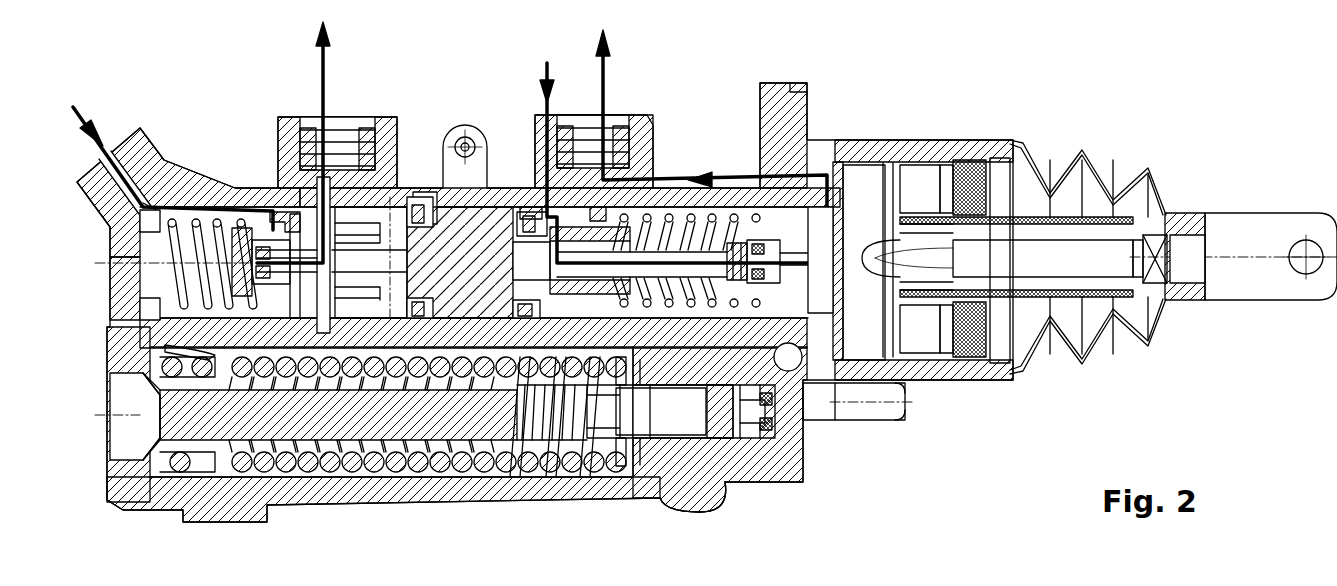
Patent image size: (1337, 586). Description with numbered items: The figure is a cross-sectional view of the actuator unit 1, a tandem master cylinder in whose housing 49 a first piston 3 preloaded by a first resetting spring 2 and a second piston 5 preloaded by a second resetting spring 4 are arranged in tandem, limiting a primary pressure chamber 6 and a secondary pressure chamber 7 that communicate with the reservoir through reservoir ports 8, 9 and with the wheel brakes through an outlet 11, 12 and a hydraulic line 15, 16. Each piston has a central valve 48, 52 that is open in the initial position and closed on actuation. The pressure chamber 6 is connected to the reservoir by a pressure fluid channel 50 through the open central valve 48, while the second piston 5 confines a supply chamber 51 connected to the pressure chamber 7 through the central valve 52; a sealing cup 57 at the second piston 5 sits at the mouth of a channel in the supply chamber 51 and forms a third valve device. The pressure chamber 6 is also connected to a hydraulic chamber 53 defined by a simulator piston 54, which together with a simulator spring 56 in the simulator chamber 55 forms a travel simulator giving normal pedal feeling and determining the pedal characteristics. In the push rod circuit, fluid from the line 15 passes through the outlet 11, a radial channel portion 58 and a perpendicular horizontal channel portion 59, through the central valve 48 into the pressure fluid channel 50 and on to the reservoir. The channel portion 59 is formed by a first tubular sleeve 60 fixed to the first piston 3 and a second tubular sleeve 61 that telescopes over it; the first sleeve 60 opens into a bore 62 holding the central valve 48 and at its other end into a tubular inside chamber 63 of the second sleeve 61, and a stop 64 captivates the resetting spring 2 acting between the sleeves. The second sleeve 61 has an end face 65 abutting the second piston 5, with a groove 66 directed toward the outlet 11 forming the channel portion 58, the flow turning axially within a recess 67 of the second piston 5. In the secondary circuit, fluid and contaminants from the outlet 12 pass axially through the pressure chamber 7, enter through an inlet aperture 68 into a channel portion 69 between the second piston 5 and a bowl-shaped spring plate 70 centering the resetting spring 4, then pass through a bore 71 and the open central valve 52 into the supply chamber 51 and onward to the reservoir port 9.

The actuator unit 1 is at (235, 182).
The first resetting spring 2 is at (667, 214).
The first piston 3 is at (816, 186).
The second resetting spring 4 is at (205, 218).
The second piston 5 is at (307, 312).
The pressure chamber 6 is at (592, 441).
The pressure chamber 7 is at (217, 312).
The reservoir port 8 is at (568, 118).
The reservoir port 9 is at (352, 125).
The outlet 11 is at (543, 218).
The outlet 12 is at (152, 205).
The hydraulic line 15 is at (546, 62).
The hydraulic line 16 is at (75, 105).
The central valve 48 is at (823, 337).
The housing 49 is at (857, 383).
The pressure fluid channel 50 is at (749, 226).
The supply chamber 51 is at (357, 307).
The central valve 52 is at (290, 305).
The hydraulic chamber 53 is at (773, 460).
The simulator piston 54 is at (682, 455).
The simulator chamber 55 is at (467, 472).
The simulator spring 56 is at (520, 449).
The sealing cup 57 is at (293, 200).
The channel portion 58 is at (528, 207).
The channel portion 59 is at (625, 397).
The first tubular sleeve 60 is at (722, 484).
The second tubular sleeve 61 is at (590, 228).
The bore 62 is at (732, 240).
The inside chamber 63 is at (573, 410).
The stop 64 is at (610, 172).
The end face 65 is at (503, 312).
The groove 66 is at (523, 248).
The recess 67 is at (456, 182).
The inlet aperture 68 is at (319, 180).
The channel portion 69 is at (268, 243).
The spring plate 70 is at (257, 310).
The bore 71 is at (236, 232).